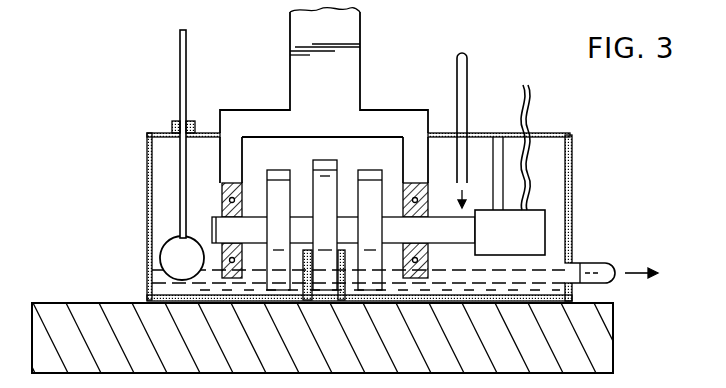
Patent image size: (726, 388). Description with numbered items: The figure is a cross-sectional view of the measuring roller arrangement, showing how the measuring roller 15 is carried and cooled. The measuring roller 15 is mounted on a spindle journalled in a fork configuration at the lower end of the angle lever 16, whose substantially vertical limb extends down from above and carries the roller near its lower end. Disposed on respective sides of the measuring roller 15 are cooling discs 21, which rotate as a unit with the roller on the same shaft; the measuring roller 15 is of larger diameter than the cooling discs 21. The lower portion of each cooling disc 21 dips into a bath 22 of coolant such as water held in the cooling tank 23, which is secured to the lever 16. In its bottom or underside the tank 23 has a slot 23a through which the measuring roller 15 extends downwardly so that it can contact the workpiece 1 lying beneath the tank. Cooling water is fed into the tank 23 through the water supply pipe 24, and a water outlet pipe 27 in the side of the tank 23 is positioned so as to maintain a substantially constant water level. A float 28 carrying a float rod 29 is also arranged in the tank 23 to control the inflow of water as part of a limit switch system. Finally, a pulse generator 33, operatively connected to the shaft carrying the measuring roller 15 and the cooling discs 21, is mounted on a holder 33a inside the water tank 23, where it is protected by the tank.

The workpiece 1 is at (605, 357).
The measuring roller 15 is at (327, 176).
The angle lever 16 is at (360, 26).
The cooling discs 21 is at (277, 180).
The coolant bath 22 is at (158, 283).
The cooling tank 23 is at (148, 180).
The slot 23a is at (313, 283).
The water supply pipe 24 is at (466, 70).
The water outlet pipe 27 is at (605, 263).
The float 28 is at (164, 252).
The float rod 29 is at (180, 48).
The pulse generator 33 is at (543, 225).
The holder 33a is at (497, 152).